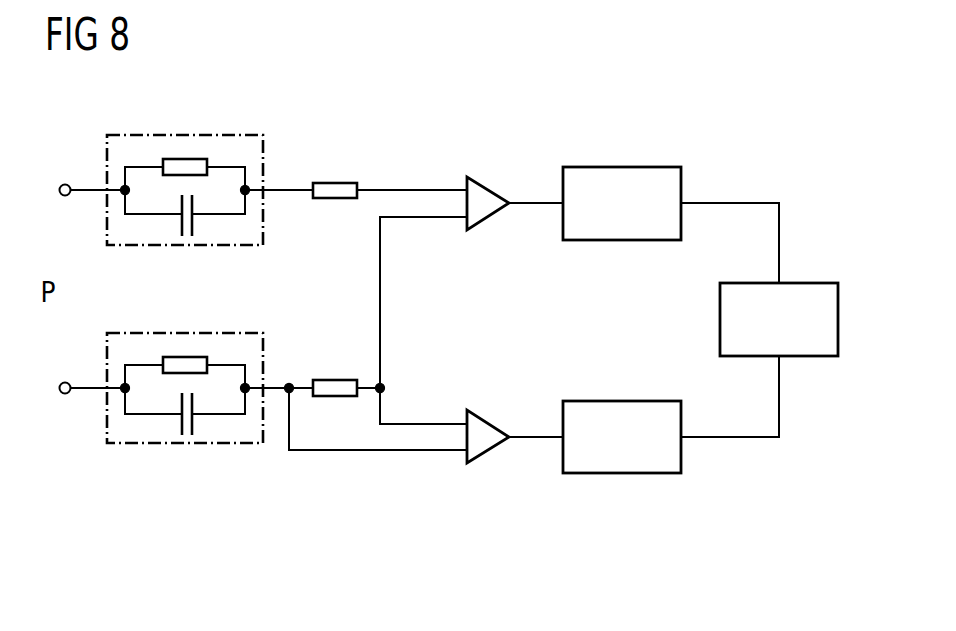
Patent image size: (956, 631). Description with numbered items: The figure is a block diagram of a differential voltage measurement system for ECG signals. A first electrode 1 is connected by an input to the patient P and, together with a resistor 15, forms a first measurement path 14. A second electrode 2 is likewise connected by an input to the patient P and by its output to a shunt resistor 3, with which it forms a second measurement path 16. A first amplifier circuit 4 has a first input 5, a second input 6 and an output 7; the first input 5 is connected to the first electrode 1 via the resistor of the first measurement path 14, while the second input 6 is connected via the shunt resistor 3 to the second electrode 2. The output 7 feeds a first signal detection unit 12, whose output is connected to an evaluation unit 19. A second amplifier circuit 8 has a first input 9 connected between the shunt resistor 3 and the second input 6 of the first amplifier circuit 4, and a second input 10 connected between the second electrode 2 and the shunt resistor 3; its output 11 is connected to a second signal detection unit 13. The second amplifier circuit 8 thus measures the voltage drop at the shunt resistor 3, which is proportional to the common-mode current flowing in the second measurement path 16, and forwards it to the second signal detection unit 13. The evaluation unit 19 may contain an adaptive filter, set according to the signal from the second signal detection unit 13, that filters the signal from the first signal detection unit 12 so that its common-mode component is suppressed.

The first electrode 1 is at (200, 135).
The second electrode 2 is at (200, 333).
The shunt resistor 3 is at (336, 380).
The first amplifier circuit 4 is at (492, 186).
The first input 5 is at (466, 182).
The second input 6 is at (466, 226).
The output 7 is at (511, 205).
The second amplifier circuit 8 is at (492, 420).
The first input 9 is at (466, 416).
The second input 10 is at (466, 459).
The output 11 is at (511, 439).
The first signal detection unit 12 is at (681, 187).
The second signal detection unit 13 is at (681, 418).
The first measurement path 14 is at (336, 183).
The resistor 15 is at (389, 112).
The second measurement path 16 is at (347, 483).
The evaluation unit 19 is at (720, 323).